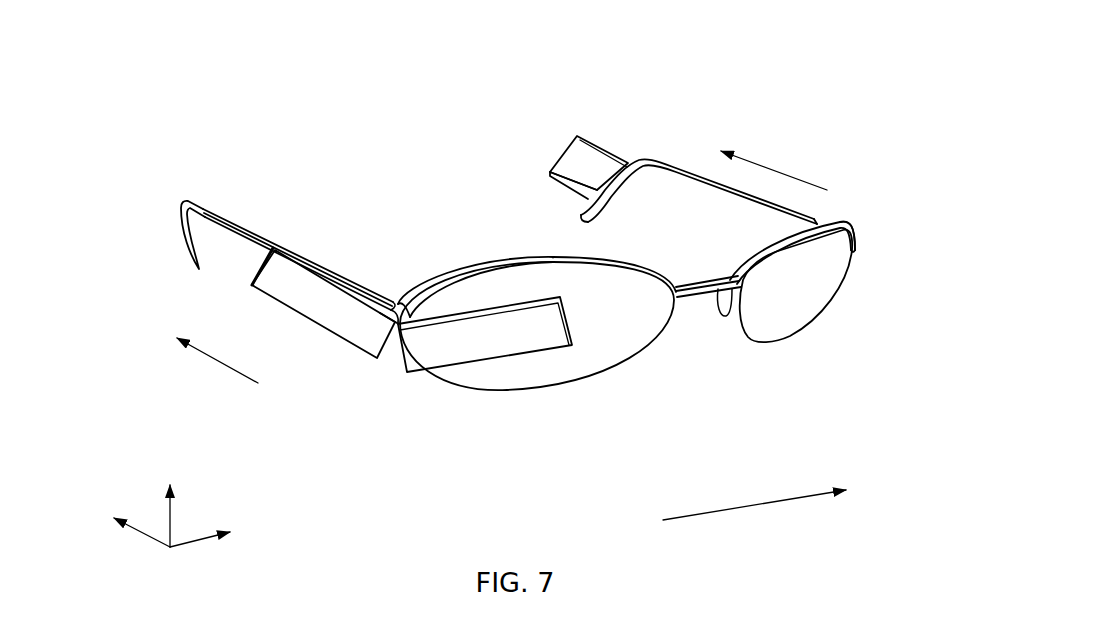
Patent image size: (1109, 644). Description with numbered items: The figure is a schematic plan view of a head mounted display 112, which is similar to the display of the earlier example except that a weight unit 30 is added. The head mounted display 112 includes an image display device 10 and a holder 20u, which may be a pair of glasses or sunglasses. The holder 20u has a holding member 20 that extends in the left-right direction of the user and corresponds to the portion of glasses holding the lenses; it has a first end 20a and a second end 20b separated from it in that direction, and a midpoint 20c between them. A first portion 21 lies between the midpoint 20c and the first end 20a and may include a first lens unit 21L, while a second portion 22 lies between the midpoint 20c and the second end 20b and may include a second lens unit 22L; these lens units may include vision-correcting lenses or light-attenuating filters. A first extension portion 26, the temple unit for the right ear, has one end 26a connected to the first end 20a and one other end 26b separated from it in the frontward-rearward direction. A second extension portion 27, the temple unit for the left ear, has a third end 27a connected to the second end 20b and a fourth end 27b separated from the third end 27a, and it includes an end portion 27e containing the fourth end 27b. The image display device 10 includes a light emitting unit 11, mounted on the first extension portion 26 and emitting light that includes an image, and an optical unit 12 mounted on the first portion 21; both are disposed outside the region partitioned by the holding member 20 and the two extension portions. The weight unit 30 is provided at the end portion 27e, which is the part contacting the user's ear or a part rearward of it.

The head mounted display 112 is at (874, 118).
The image display device 10 is at (292, 432).
The light emitting unit 11 is at (323, 315).
The optical unit 12 is at (413, 352).
The holding member 20 is at (762, 433).
The first end 20a is at (403, 305).
The second end 20b is at (855, 252).
The midpoint 20c is at (707, 290).
The holder 20u is at (253, 197).
The first portion 21 is at (573, 262).
The first lens unit 21L is at (583, 357).
The second portion 22 is at (763, 250).
The second lens unit 22L is at (795, 307).
The first extension portion 26 is at (263, 243).
The one end 26a is at (395, 300).
The one other end 26b is at (199, 268).
The second extension portion 27 is at (717, 188).
The third end 27a is at (857, 248).
The fourth end 27b is at (580, 212).
The end portion 27e is at (550, 172).
The weight unit 30 is at (563, 152).